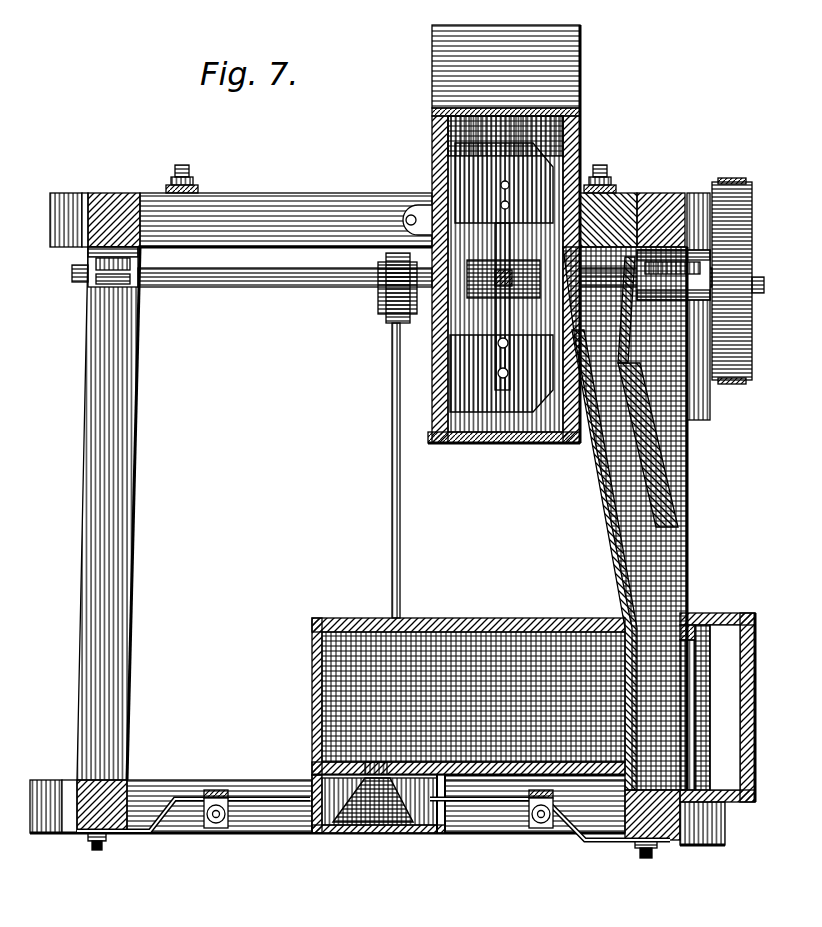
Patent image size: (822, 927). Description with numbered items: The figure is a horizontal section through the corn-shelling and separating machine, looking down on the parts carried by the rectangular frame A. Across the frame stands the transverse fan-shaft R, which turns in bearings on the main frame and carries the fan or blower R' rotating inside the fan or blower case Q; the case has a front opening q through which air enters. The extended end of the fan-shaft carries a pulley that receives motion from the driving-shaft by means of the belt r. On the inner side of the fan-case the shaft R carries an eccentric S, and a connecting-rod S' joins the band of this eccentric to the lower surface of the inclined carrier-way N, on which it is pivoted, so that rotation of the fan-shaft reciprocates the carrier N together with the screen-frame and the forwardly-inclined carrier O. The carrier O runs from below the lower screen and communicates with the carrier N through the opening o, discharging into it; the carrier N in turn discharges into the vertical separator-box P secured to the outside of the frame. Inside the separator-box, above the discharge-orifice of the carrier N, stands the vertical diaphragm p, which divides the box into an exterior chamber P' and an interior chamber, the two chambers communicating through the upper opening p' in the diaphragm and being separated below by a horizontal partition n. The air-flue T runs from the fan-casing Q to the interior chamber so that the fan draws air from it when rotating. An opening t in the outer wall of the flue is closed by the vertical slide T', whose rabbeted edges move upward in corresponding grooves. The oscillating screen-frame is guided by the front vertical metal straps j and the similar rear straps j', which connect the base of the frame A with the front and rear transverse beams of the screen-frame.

The frame A is at (370, 513).
The front vertical metal straps j is at (407, 519).
The rear straps j' is at (216, 792).
The front opening q is at (560, 73).
The fan-case Q is at (503, 446).
The fan-shaft R is at (425, 293).
The fan R' is at (501, 277).
The belt r is at (752, 388).
The eccentric S is at (382, 300).
The connecting-rod S' is at (382, 470).
The opening t is at (688, 436).
The air-flue T is at (604, 470).
The vertical slide T' is at (643, 518).
The inclined carrier-way N is at (352, 606).
The opening o is at (385, 766).
The forwardly-inclined carrier O is at (337, 836).
The separator-box P is at (717, 682).
The exterior chamber P' is at (763, 708).
The vertical diaphragm p is at (682, 707).
The upper opening p' is at (678, 715).
The slot n is at (724, 707).